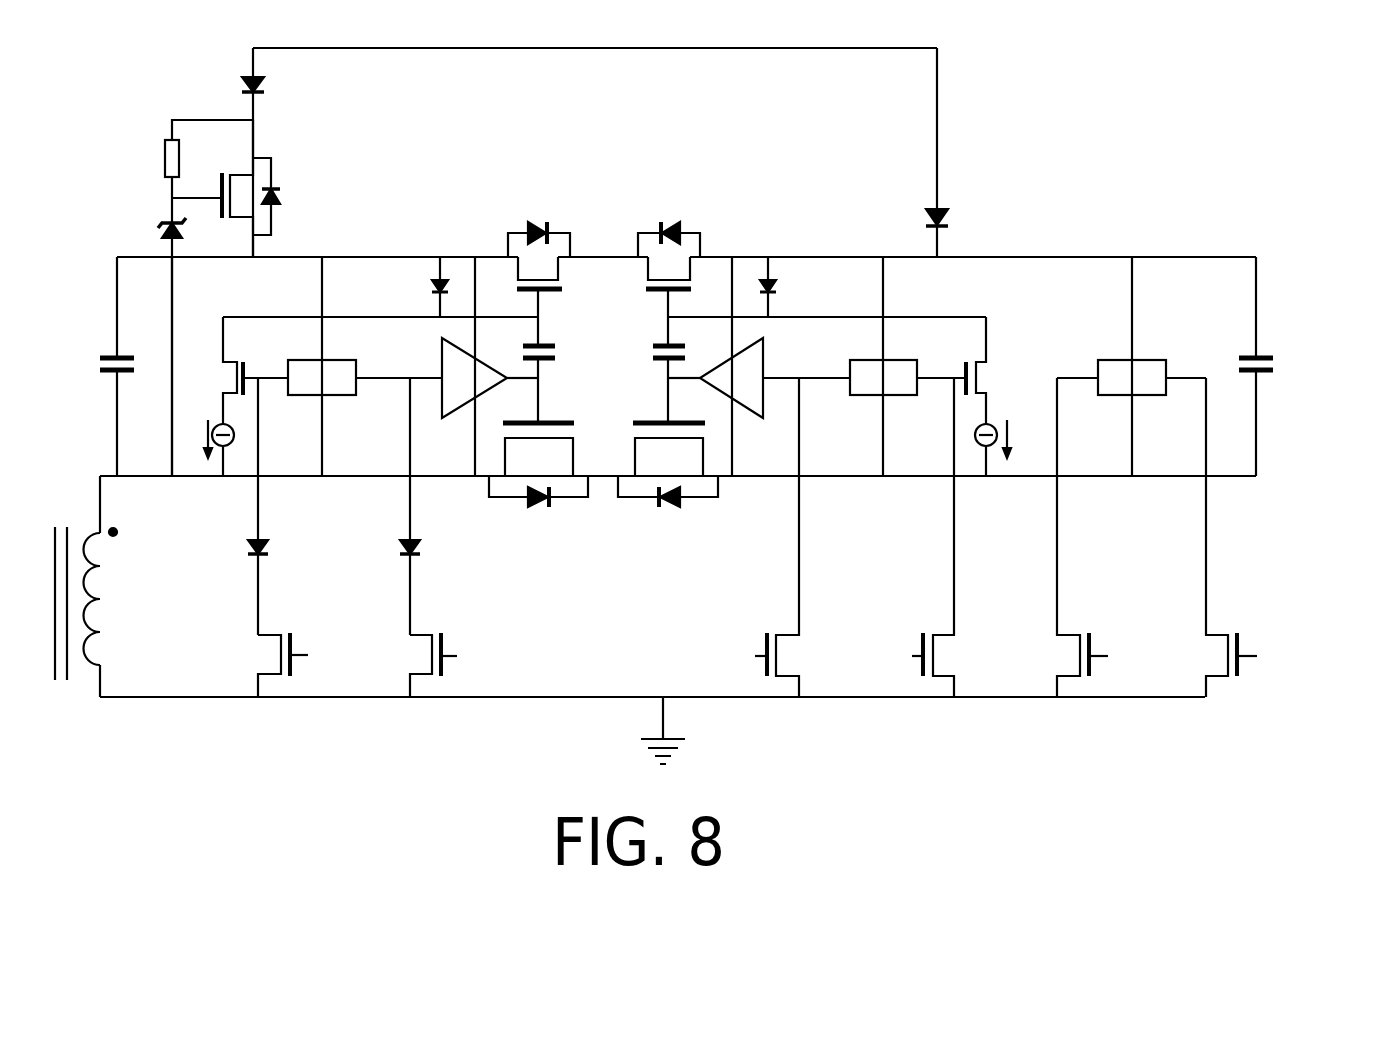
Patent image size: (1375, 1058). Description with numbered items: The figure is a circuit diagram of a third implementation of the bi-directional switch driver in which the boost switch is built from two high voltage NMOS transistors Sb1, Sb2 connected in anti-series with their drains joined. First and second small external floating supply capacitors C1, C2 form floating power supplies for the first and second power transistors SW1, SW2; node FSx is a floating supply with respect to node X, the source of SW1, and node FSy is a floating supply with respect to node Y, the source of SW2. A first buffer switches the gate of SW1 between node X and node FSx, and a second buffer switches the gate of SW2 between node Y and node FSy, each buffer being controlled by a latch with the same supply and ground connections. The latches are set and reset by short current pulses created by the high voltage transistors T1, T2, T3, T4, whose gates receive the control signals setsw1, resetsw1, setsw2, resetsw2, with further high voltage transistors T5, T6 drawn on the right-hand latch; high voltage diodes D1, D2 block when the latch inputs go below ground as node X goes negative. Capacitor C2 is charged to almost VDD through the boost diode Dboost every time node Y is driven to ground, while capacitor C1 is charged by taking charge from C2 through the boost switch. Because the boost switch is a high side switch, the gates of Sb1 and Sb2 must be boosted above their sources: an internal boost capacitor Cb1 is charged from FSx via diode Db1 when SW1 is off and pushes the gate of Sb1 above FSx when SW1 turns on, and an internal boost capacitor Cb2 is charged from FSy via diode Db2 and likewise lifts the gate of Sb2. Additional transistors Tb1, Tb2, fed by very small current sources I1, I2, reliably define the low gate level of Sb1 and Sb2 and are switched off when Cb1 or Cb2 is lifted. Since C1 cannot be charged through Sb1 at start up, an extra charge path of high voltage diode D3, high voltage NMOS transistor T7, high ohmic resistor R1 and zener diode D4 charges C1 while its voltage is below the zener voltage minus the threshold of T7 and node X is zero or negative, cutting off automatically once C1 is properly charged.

The supply voltage VDD is at (595, 30).
The high voltage diode D3 is at (232, 152).
The high ohmic resistor R1 is at (190, 171).
The high voltage NMOS transistor T7 is at (246, 188).
The node FSx is at (135, 236).
The zener diode D4 is at (194, 347).
The NMOS transistor Sb1 is at (539, 238).
The NMOS transistor Sb2 is at (669, 238).
The boost diode Dboost is at (855, 152).
The node FSy is at (1188, 230).
The diode Db1 is at (390, 287).
The diode Db2 is at (802, 287).
The internal boost capacitor Cb1 is at (564, 356).
The internal boost capacitor Cb2 is at (644, 356).
The floating supply capacitor C1 is at (134, 346).
The floating supply capacitor C2 is at (1273, 346).
The additional transistor Tb1 is at (209, 370).
The additional transistor Tb2 is at (1001, 370).
The current source I1 is at (206, 448).
The current source I2 is at (1006, 448).
The node X is at (137, 453).
The node Y is at (856, 446).
The high voltage diode D1 is at (280, 506).
The high voltage diode D2 is at (432, 506).
The first transistor SW1 is at (538, 492).
The second transistor SW2 is at (668, 492).
The high voltage transistor T1 is at (271, 665).
The high voltage transistor T2 is at (423, 665).
The high voltage transistor T3 is at (786, 537).
The high voltage transistor T4 is at (942, 537).
The transistor T5 is at (1065, 537).
The transistor T6 is at (1224, 537).
The element latch is at (727, 377).
The set switch 1 control signal setsw1 is at (744, 636).
The reset switch 1 control signal resetsw1 is at (910, 638).
The set switch 2 control signal setsw2 is at (875, 636).
The reset switch 2 control signal resetsw2 is at (701, 639).